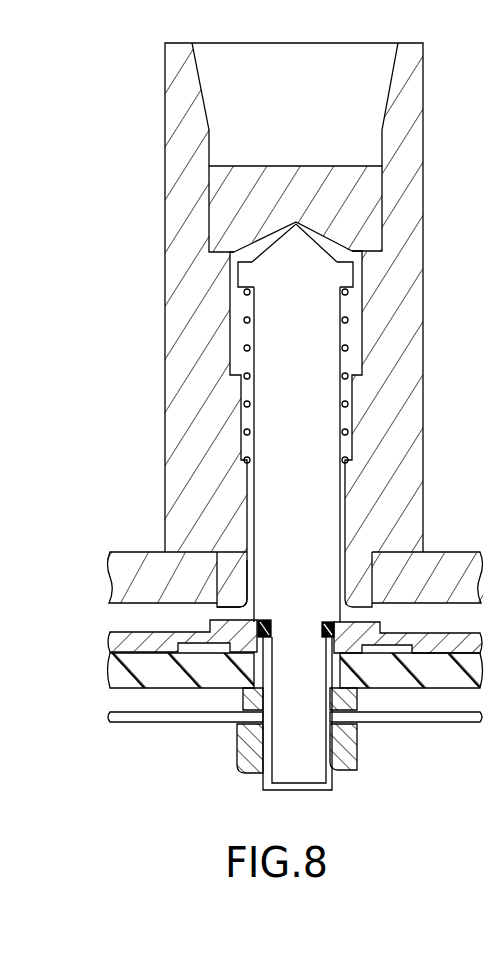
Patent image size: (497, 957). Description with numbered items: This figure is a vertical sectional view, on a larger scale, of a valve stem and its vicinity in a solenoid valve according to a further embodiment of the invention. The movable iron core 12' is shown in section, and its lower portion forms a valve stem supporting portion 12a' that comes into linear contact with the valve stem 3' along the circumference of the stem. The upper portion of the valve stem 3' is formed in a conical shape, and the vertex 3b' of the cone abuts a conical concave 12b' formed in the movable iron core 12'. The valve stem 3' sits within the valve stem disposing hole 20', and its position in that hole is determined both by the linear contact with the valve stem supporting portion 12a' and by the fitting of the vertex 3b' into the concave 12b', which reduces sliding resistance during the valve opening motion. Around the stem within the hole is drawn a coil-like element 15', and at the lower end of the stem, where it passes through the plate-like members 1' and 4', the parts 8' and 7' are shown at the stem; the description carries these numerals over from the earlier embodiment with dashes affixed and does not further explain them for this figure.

The movable iron core 12' is at (295, 325).
The conical concave 12b' is at (297, 186).
The valve stem supporting portion 12a' is at (255, 583).
The valve stem 3' is at (350, 455).
The vertex 3b' is at (294, 191).
The valve stem disposing hole 20' is at (186, 357).
The spring coil 15' is at (402, 376).
The nut 8' is at (296, 605).
The washer 7' is at (295, 627).
The panel 1' is at (295, 713).
The plate 4' is at (295, 738).